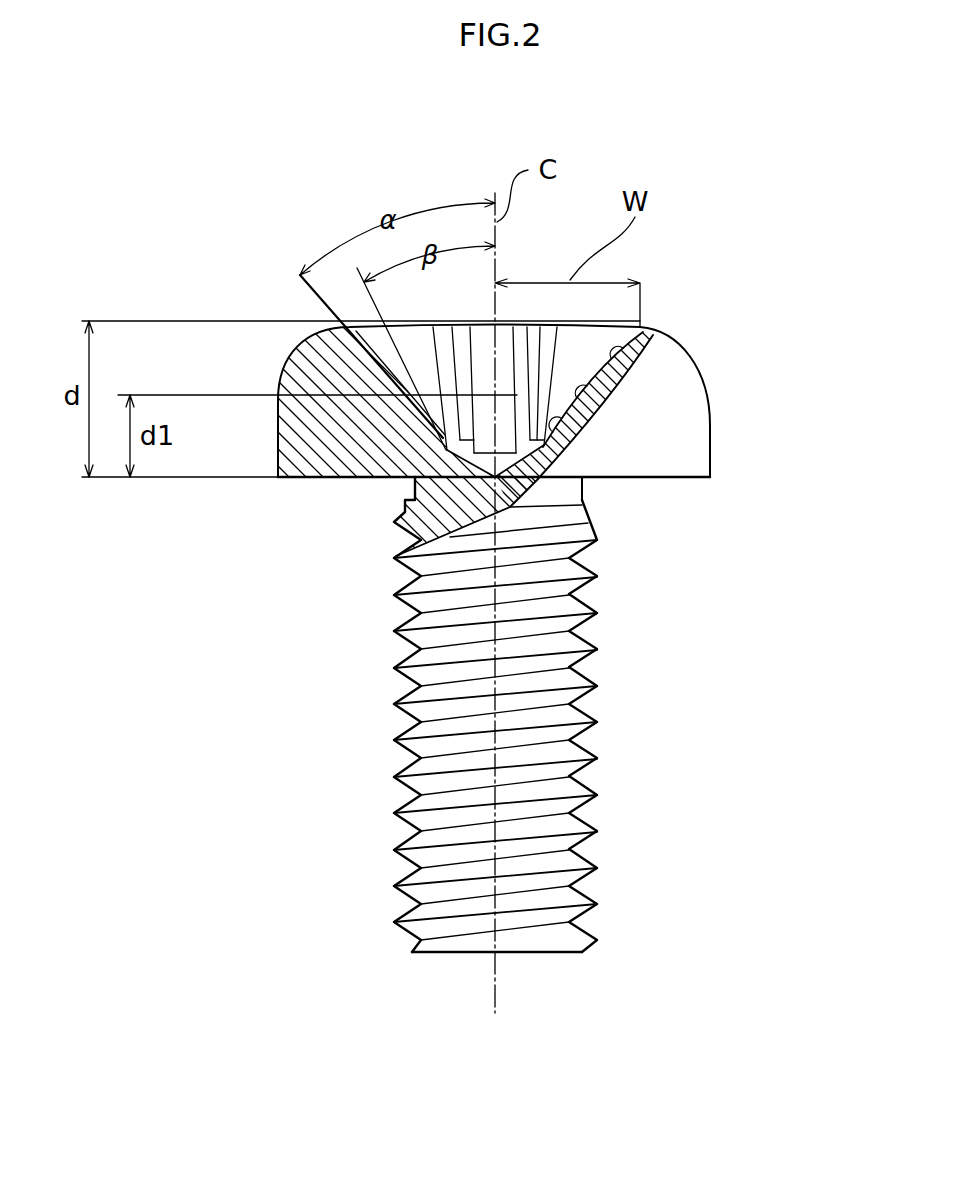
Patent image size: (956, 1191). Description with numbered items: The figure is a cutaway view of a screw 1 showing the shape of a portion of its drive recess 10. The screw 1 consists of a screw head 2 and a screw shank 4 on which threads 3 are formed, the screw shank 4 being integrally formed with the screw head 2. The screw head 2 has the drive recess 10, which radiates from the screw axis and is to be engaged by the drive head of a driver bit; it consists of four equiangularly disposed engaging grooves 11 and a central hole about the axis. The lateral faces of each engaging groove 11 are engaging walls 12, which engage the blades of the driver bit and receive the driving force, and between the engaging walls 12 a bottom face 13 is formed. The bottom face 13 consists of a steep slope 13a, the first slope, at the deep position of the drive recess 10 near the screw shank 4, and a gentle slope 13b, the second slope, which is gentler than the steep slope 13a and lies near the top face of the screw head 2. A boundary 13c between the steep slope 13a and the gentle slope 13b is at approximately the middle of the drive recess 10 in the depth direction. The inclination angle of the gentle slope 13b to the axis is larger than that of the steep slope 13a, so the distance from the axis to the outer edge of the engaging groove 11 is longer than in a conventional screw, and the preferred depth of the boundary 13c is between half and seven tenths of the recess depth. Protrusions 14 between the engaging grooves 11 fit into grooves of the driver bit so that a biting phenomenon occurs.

The screw 1 is at (257, 312).
The screw head 2 is at (303, 427).
The threads 3 is at (598, 650).
The screw shank 4 is at (545, 750).
The drive recess 10 is at (595, 289).
The engaging groove 11 is at (501, 334).
The engaging wall 12 is at (383, 347).
The bottom face 13 is at (587, 413).
The steep slope 13a is at (558, 430).
The gentle slope 13b is at (640, 337).
The boundary 13c is at (573, 392).
The protrusion 14 is at (584, 481).